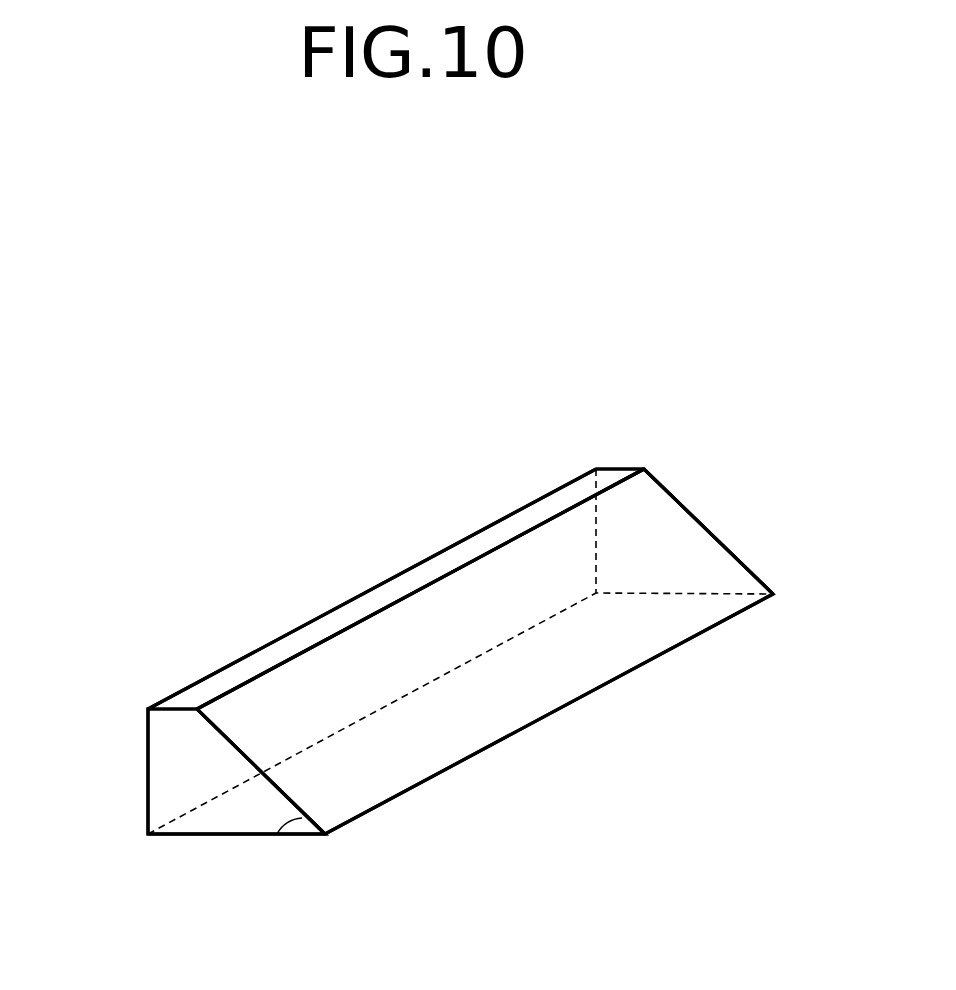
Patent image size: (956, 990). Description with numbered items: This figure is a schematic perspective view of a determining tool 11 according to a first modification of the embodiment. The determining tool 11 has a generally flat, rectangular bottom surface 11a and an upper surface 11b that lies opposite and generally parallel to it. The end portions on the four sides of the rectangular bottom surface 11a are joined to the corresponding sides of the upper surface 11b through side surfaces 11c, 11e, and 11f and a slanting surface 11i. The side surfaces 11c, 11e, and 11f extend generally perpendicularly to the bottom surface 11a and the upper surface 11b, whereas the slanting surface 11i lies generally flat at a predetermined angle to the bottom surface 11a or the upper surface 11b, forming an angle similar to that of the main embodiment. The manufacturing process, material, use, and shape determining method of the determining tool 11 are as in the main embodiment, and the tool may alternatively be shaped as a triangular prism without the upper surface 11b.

The determining tool 11 is at (358, 442).
The bottom surface 11a is at (486, 735).
The upper surface 11b is at (365, 607).
The side surface 11c is at (213, 817).
The side surface 11e is at (698, 542).
The side surface 11f is at (168, 745).
The slanting surface 11i is at (617, 505).